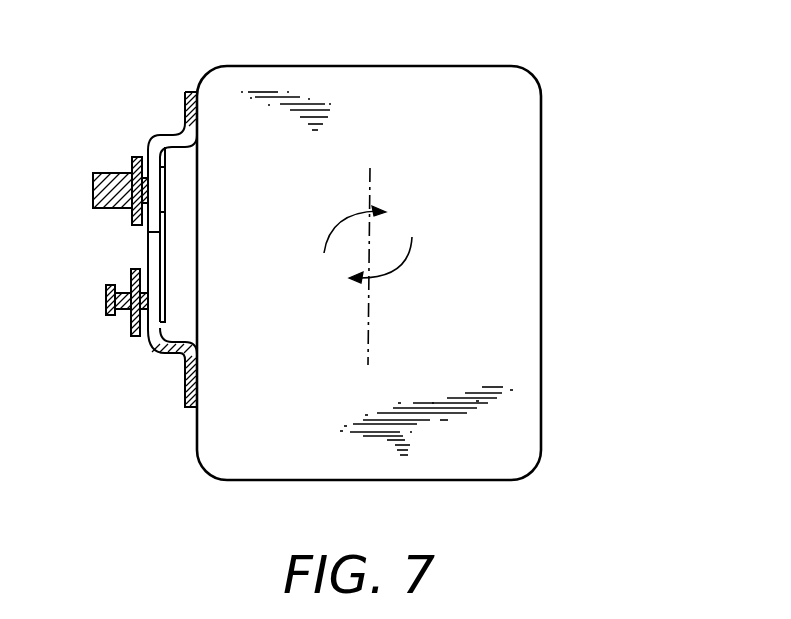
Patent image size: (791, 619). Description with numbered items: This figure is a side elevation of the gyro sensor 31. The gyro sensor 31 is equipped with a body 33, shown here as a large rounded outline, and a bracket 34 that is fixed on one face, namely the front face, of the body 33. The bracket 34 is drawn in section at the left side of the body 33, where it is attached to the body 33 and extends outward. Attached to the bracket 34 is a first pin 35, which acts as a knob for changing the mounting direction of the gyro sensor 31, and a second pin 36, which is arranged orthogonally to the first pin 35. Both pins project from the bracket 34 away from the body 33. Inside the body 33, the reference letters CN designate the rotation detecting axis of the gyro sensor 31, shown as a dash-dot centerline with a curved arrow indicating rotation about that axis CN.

The gyro sensor 31 is at (389, 64).
The body 33 is at (399, 470).
The bracket 34 is at (165, 356).
The first pin 35 is at (113, 173).
The second pin 36 is at (108, 317).
The rotation detecting axis CN is at (373, 183).